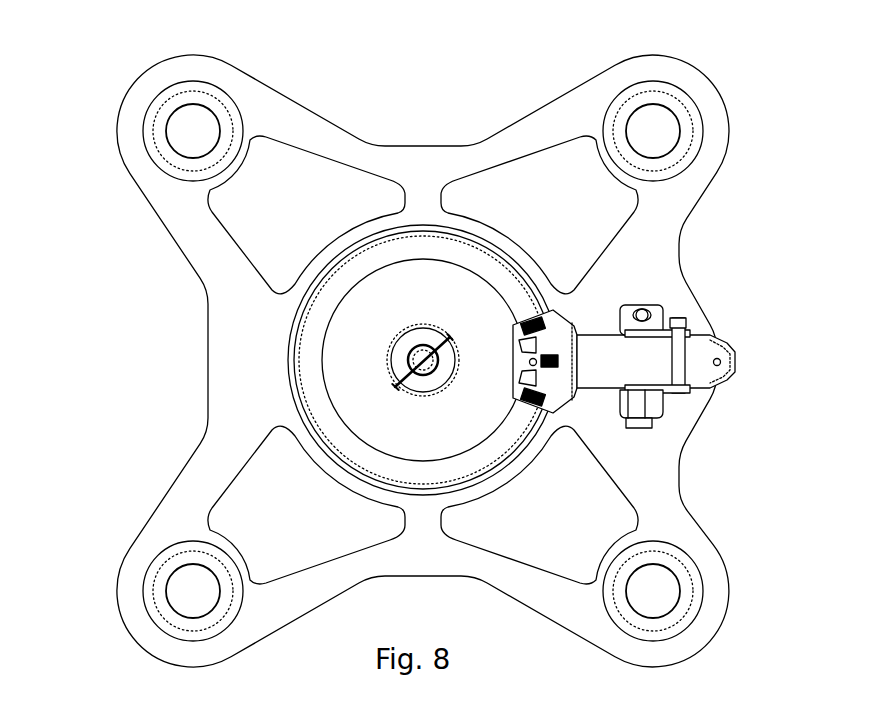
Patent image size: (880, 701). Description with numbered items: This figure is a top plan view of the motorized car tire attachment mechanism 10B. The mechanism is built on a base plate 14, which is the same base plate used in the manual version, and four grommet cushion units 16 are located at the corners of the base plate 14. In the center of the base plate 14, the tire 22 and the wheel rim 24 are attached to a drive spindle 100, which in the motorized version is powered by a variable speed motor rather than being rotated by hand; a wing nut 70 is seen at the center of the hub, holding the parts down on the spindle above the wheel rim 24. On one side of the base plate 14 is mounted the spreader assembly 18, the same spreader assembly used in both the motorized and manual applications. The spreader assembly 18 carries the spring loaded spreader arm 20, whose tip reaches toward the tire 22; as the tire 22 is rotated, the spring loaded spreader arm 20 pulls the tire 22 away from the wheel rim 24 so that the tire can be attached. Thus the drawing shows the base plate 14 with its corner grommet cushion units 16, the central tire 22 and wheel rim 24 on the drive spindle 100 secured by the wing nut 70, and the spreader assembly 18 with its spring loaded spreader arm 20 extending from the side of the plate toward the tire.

The motorized car tire attachment mechanism 10B is at (409, 352).
The base plate 14 is at (249, 365).
The grommet cushion units 16 is at (173, 103).
The spreader assembly 18 is at (642, 349).
The spring loaded spreader arm 20 is at (700, 373).
The tire 22 is at (423, 358).
The wheel rim 24 is at (443, 441).
The wing nut 70 is at (398, 339).
The drive spindle 100 is at (393, 373).